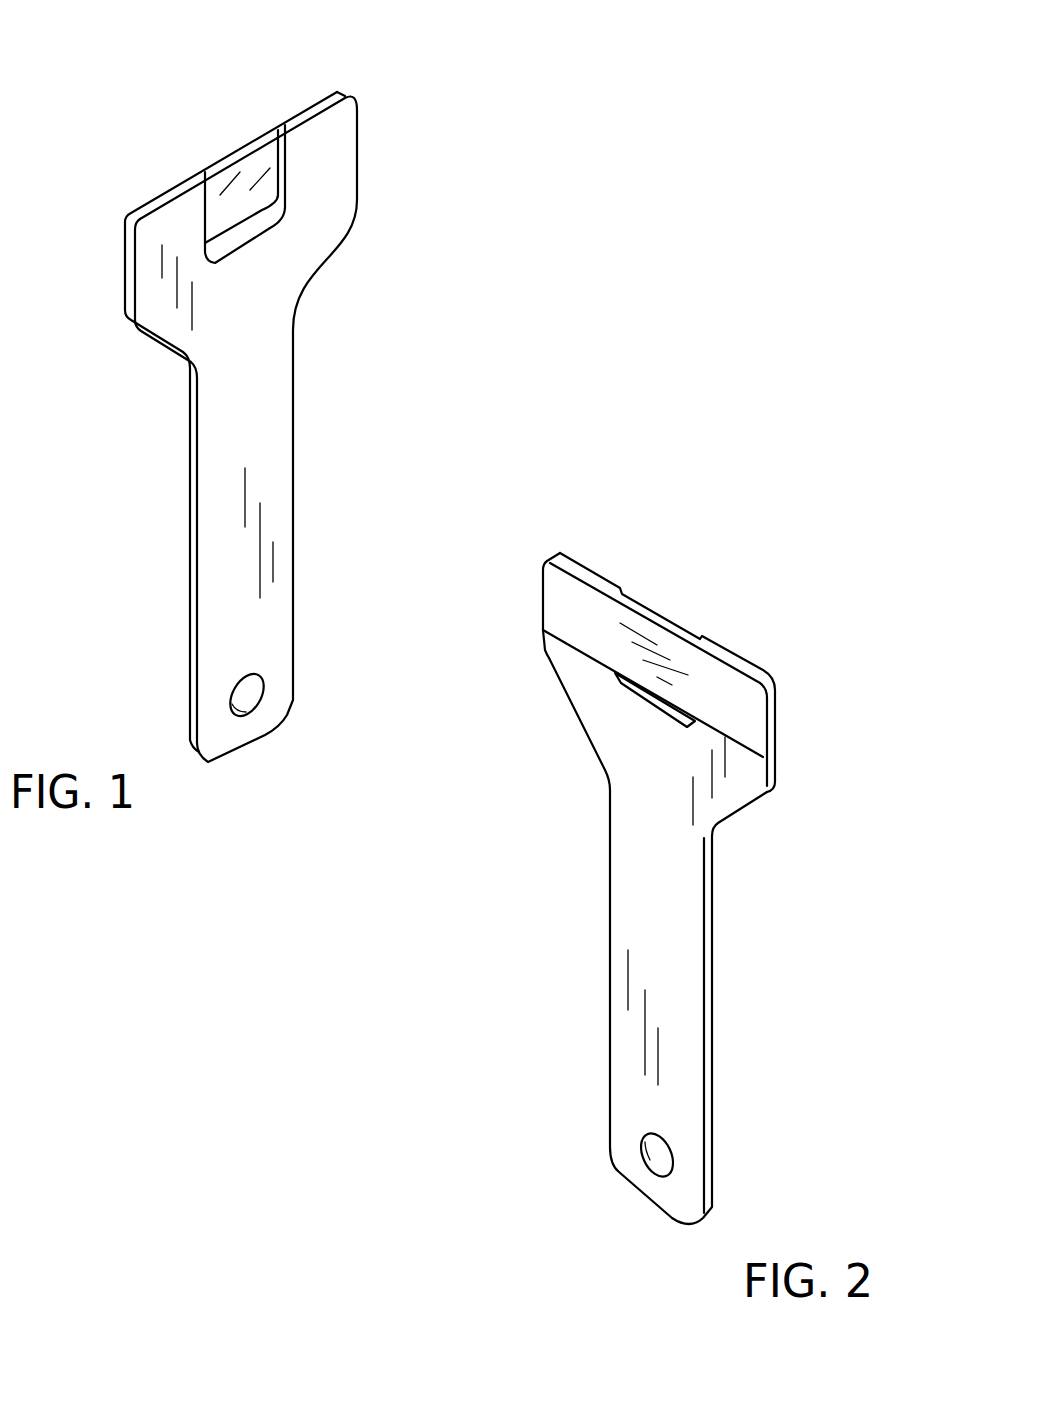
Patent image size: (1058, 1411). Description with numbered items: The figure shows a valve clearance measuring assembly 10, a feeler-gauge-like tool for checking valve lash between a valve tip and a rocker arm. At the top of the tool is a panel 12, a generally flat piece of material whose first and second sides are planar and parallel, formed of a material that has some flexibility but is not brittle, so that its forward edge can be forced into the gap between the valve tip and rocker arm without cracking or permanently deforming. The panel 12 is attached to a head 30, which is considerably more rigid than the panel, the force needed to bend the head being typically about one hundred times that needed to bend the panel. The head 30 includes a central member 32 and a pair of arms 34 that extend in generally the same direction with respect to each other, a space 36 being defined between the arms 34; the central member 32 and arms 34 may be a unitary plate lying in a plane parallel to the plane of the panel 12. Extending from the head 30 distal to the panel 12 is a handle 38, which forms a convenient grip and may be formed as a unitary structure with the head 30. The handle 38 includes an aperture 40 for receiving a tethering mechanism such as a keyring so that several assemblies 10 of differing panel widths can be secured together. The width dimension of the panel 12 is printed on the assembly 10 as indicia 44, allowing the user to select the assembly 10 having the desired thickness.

In FIG. 1, the valve clearance measuring method and assembly 10 is at (475, 160).
In FIG. 1, the panel 12 is at (280, 127).
In FIG. 2, the panel 12 is at (543, 628).
In FIG. 1, the space 36 is at (250, 245).
In FIG. 1, the indicia 44 is at (300, 632).
In FIG. 1, the aperture 40 is at (265, 712).
In FIG. 2, the aperture 40 is at (630, 1170).
In FIG. 2, the head 30 is at (768, 842).
In FIG. 2, the central member 32 is at (612, 718).
In FIG. 2, the arms 34 is at (568, 663).
In FIG. 2, the handle 38 is at (712, 1103).